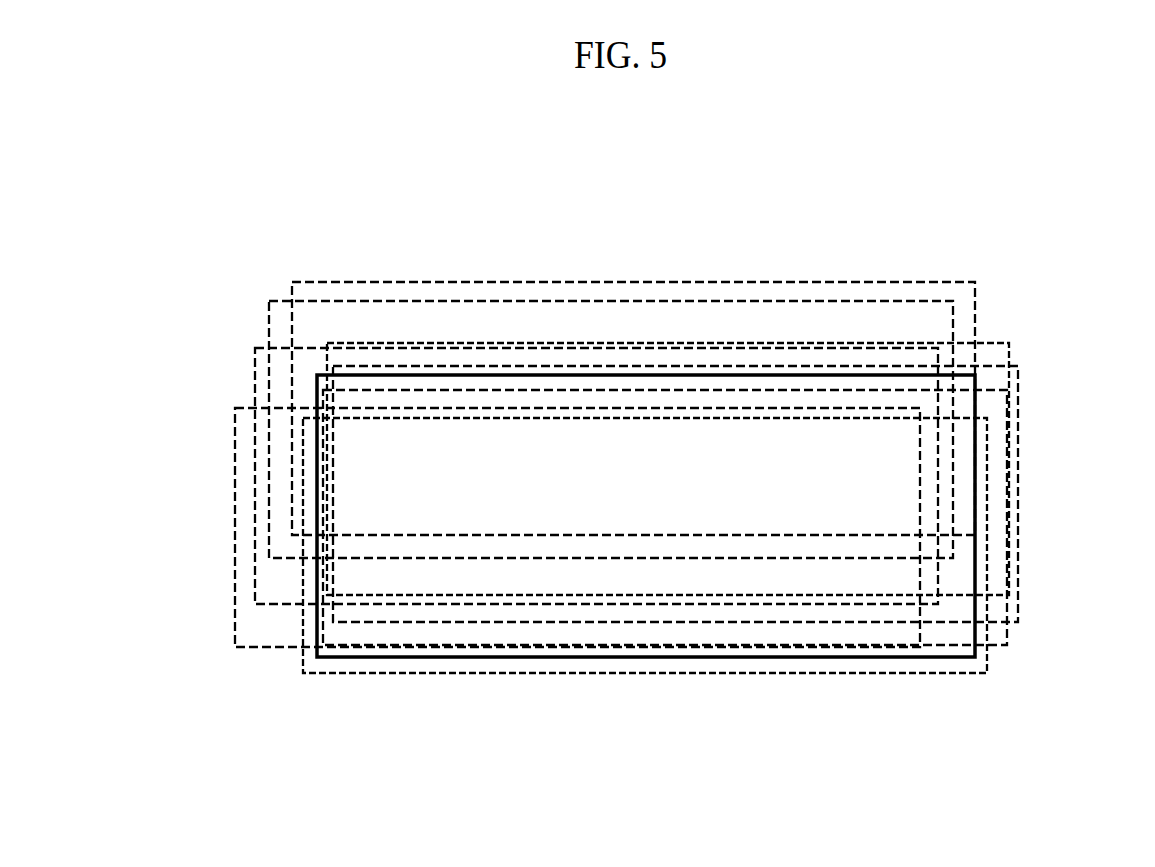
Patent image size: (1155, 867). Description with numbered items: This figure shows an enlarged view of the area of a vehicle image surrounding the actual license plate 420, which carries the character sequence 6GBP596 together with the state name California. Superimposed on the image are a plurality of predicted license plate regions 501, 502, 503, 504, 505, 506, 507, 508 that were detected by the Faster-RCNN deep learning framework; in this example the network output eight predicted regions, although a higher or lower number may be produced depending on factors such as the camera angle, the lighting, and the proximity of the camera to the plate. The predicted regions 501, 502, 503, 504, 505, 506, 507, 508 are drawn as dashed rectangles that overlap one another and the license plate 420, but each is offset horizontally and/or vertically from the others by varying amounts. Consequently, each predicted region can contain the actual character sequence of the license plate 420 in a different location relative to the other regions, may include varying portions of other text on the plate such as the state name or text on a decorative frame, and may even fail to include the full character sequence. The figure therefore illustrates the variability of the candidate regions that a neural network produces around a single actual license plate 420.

The license plate 420 is at (560, 390).
The predicted license plate region 501 is at (325, 282).
The predicted license plate region 502 is at (268, 332).
The predicted license plate region 503 is at (255, 378).
The predicted license plate region 504 is at (235, 520).
The predicted license plate region 505 is at (1007, 343).
The predicted license plate region 506 is at (1018, 397).
The predicted license plate region 507 is at (1007, 645).
The predicted license plate region 508 is at (938, 675).